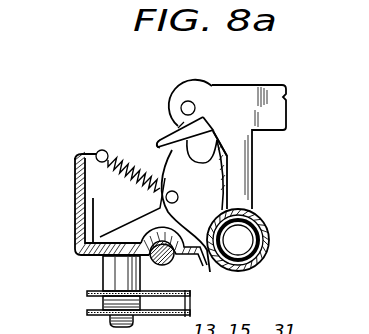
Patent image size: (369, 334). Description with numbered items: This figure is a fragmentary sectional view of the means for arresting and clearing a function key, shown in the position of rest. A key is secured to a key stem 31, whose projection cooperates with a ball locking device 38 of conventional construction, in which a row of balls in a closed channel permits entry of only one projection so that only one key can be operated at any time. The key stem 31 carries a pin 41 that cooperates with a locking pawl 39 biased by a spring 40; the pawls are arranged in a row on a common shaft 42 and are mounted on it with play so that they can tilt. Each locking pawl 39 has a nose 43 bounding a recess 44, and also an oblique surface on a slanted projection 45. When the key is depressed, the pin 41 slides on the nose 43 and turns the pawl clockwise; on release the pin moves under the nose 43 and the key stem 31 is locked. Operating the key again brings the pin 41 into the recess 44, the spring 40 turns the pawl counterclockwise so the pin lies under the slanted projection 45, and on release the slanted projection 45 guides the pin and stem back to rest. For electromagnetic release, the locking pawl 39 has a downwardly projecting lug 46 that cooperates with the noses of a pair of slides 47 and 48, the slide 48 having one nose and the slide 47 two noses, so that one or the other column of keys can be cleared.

The key stem 31 is at (287, 97).
The ball locking device 38 is at (270, 235).
The locking pawl 39 is at (105, 226).
The spring 40 is at (141, 143).
The pin 41 is at (191, 101).
The common shaft 42 is at (183, 262).
The nose 43 is at (160, 134).
The recess 44 is at (193, 206).
The slanted projection 45 is at (212, 129).
The downwardly projecting lug 46 is at (193, 302).
The slide 47 is at (254, 193).
The slide 48 is at (88, 296).